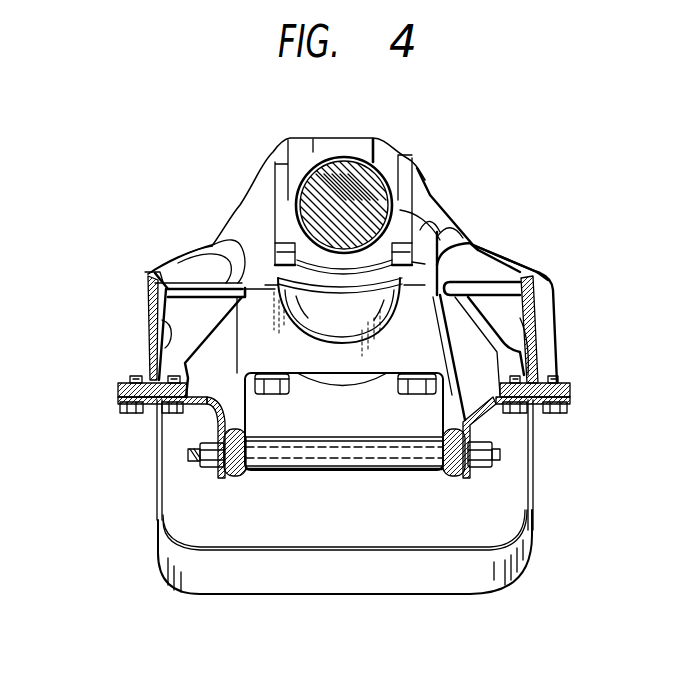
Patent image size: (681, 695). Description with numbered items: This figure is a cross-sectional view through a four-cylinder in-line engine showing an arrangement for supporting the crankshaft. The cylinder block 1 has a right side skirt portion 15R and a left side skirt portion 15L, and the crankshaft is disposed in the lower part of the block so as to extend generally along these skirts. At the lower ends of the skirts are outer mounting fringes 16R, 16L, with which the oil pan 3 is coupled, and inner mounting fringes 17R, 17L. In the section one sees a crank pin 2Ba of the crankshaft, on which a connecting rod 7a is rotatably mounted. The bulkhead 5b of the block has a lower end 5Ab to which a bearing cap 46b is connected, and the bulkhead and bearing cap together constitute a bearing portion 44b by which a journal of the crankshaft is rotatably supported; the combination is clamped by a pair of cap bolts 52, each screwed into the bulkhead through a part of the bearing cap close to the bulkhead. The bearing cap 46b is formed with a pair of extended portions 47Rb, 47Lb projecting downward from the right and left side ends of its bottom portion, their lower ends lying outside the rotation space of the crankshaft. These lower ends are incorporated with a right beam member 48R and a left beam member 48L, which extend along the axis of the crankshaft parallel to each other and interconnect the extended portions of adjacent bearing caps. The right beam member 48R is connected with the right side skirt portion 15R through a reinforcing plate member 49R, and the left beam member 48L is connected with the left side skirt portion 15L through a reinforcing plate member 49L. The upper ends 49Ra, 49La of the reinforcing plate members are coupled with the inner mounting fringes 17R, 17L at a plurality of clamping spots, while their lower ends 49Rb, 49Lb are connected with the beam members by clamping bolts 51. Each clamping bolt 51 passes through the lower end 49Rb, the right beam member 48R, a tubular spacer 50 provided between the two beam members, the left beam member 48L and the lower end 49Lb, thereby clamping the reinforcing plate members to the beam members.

The cylinder block 1 is at (537, 273).
The crank pin 2Ba is at (364, 177).
The oil pan 3 is at (473, 552).
The lower end of bulkhead 5Ab is at (215, 240).
The bulkhead 5b is at (425, 240).
The bearing cap 46b is at (403, 317).
The bearing portion 44b is at (562, 141).
The connecting rod 7a is at (390, 162).
The extended portion 47Lb is at (230, 392).
The extended portion 47Rb is at (533, 355).
The left side skirt portion 15L is at (127, 386).
The right side skirt portion 15R is at (540, 380).
The outer mounting fringe 16L is at (118, 391).
The outer mounting fringe 16R is at (556, 386).
The inner mounting fringe 17L is at (148, 382).
The inner mounting fringe 17R is at (560, 372).
The left beam member 48L is at (160, 444).
The right beam member 48R is at (531, 447).
The reinforcing plate member 49L is at (205, 410).
The upper end of reinforcing plate member 49La is at (160, 412).
The lower end of reinforcing plate member 49Lb is at (220, 472).
The reinforcing plate member 49R is at (480, 418).
The upper end of reinforcing plate member 49Ra is at (535, 411).
The lower end of reinforcing plate member 49Rb is at (474, 470).
The tubular spacer 50 is at (324, 472).
The clamping bolt 51 is at (357, 458).
The cap bolt 52 is at (416, 390).